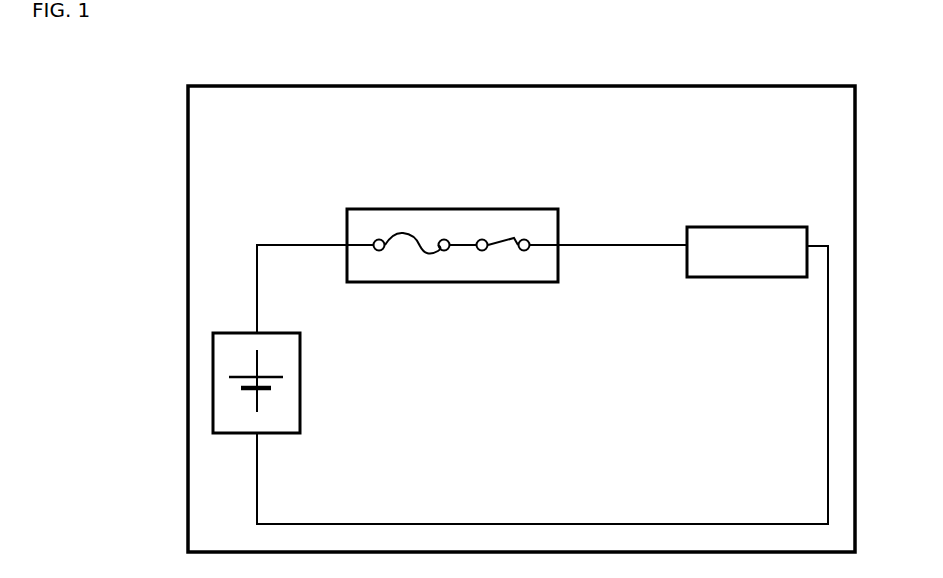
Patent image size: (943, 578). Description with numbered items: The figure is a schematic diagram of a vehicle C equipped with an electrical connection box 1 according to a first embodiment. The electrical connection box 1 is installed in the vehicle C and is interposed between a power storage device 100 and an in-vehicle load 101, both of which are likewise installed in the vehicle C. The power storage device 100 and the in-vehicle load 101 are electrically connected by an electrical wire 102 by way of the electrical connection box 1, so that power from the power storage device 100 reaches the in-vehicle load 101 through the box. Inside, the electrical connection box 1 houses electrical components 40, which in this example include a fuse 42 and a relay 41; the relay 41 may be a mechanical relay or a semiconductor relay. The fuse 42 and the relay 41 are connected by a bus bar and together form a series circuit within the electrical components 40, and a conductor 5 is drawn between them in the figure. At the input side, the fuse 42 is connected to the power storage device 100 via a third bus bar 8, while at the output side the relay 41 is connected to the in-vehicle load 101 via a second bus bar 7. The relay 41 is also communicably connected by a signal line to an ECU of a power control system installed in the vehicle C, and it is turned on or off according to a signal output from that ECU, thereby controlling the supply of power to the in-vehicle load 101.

The vehicle C is at (247, 86).
The power storage device 100 is at (300, 380).
The in-vehicle load 101 is at (722, 227).
The electrical wire 102 is at (605, 245).
The electrical connection box 1 is at (490, 282).
The electrical components 40 is at (545, 158).
The relay 41 is at (502, 223).
The fuse 42 is at (412, 223).
The third bus bar 8 is at (366, 246).
The intermediate conductor 5 is at (468, 247).
The second bus bar 7 is at (536, 248).